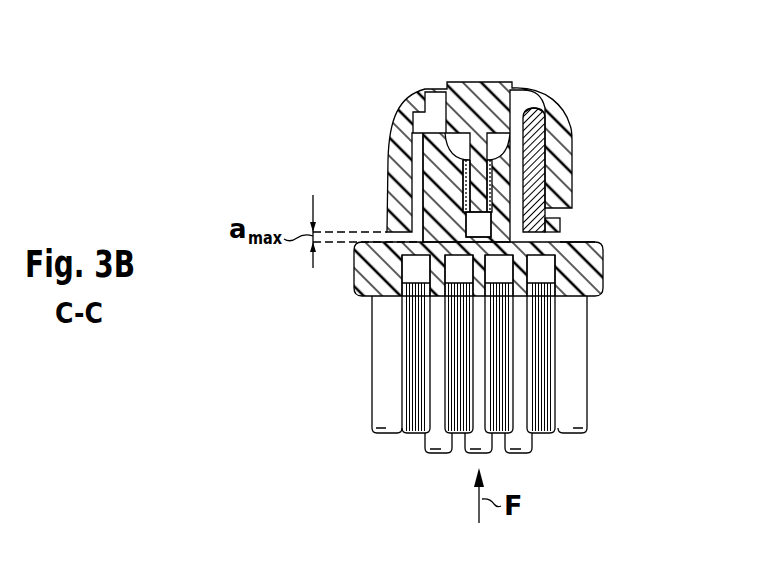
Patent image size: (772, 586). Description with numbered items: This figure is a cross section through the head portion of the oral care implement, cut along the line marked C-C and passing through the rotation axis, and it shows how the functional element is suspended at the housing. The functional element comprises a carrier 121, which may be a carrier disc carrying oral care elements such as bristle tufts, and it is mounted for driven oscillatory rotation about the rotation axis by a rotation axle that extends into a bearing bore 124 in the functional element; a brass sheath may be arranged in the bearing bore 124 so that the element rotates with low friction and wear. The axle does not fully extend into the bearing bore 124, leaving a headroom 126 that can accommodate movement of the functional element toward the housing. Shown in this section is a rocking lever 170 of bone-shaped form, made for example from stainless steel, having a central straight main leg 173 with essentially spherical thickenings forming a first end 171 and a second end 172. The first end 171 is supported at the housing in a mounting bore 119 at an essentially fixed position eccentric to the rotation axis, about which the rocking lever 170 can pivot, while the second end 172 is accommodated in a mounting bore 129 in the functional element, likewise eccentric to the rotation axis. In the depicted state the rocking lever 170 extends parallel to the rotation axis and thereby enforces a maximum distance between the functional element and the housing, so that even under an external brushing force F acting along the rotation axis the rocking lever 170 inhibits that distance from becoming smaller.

The mounting bore 119 is at (516, 92).
The carrier 121 is at (597, 270).
The bearing bore 124 is at (425, 167).
The headroom 126 is at (478, 223).
The mounting bore 129 is at (572, 247).
The rocking lever 170 is at (552, 168).
The first end 171 is at (537, 110).
The second end 172 is at (560, 224).
The main leg 173 is at (534, 152).